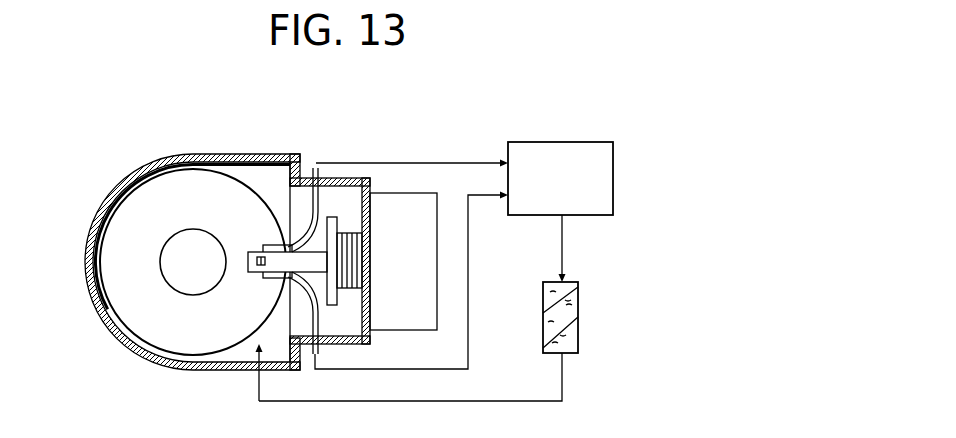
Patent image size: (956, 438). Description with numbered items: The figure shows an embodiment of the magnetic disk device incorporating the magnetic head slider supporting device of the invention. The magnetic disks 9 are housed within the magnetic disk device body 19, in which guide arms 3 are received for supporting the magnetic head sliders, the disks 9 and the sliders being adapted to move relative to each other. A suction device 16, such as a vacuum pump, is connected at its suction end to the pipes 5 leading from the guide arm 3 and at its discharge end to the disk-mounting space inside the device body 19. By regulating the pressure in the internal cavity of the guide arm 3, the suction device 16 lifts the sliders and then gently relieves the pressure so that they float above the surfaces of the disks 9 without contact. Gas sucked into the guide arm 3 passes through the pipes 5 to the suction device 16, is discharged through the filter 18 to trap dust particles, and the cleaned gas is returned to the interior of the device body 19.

The magnetic disk device body 19 is at (102, 198).
The magnetic disk 9 is at (185, 203).
The guide arm 3 is at (287, 258).
The pipe 5 is at (316, 348).
The suction device 16 is at (598, 142).
The filter 18 is at (578, 288).